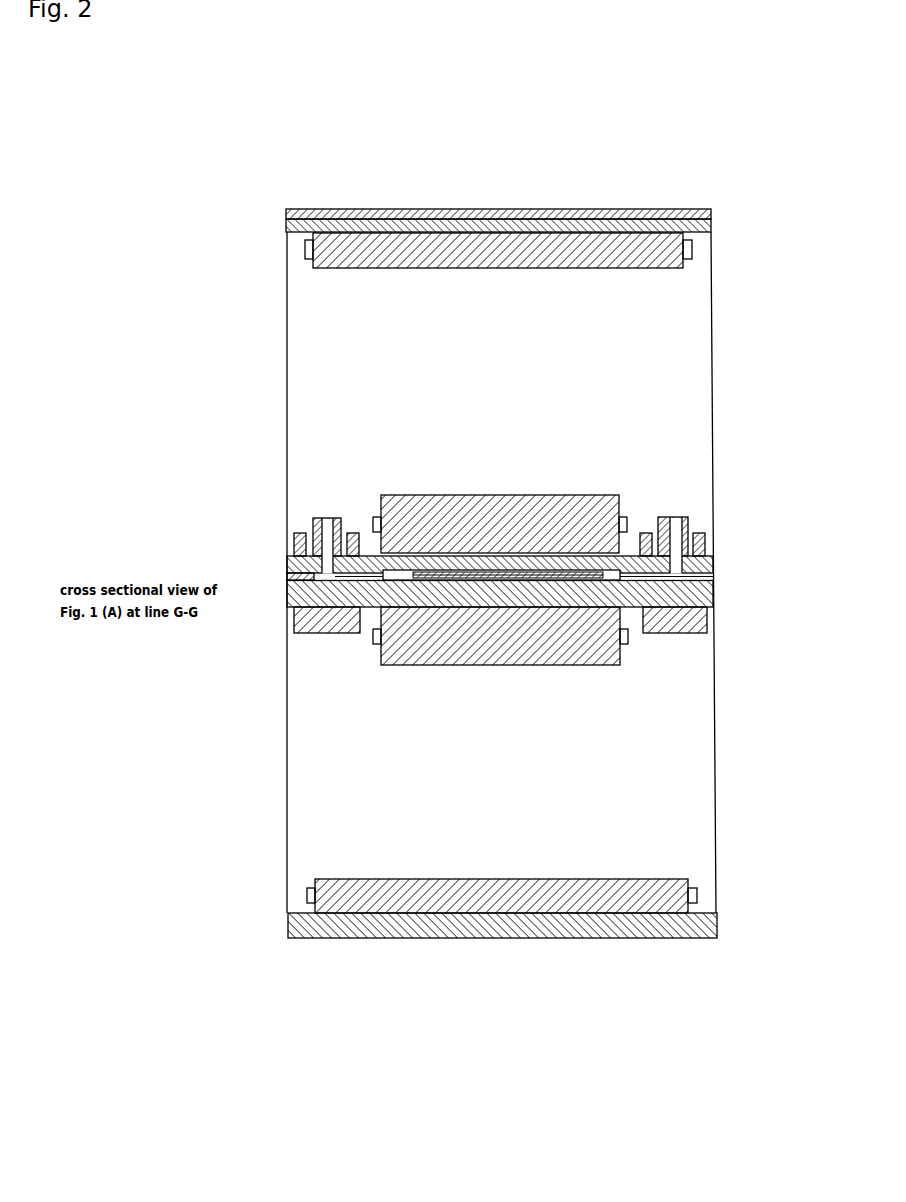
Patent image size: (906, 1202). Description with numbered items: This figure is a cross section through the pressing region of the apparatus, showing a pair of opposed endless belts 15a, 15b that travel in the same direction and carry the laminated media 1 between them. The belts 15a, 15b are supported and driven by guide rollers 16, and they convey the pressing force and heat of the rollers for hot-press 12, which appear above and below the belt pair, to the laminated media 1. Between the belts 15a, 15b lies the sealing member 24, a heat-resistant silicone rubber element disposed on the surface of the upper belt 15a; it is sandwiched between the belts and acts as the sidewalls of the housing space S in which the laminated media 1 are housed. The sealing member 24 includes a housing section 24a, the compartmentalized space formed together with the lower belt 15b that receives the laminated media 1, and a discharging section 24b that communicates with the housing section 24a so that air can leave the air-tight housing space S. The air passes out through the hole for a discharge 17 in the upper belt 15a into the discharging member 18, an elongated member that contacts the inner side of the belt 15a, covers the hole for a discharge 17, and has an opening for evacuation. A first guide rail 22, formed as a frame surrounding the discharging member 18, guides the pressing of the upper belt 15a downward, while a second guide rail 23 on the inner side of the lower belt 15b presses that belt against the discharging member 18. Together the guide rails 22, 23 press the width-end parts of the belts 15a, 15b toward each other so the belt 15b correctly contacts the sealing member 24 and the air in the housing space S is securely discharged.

The laminated media 1 is at (437, 585).
The rollers for hot-press section 12 is at (400, 510).
The endless belt 15a is at (285, 218).
The endless belt 15b is at (287, 605).
The guide roller 16 is at (392, 268).
The hole for a discharge 17 is at (673, 562).
The discharging member 18 is at (686, 518).
The first guide rail 22 is at (297, 545).
The second guide rail 23 is at (297, 630).
The sealing member 24 is at (712, 210).
The housing section 24a is at (592, 582).
The discharging section 24b is at (649, 603).
The housing space S is at (600, 570).